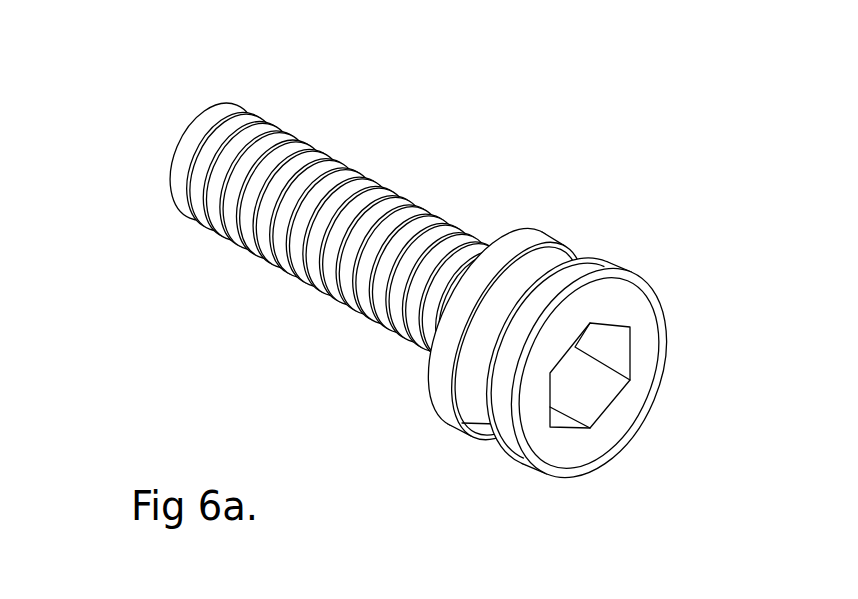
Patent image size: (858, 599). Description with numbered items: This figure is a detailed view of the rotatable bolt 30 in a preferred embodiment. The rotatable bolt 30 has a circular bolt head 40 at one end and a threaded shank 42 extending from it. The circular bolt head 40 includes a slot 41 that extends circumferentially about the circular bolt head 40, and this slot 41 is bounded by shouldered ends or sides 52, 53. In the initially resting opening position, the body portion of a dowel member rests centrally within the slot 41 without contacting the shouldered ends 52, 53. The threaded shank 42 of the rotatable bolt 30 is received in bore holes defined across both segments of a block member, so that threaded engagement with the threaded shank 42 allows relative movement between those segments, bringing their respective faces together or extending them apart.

The rotatable bolt 30 is at (497, 274).
The circular bolt head 40 is at (640, 303).
The slot 41 is at (566, 352).
The threaded shank 42 is at (288, 271).
The shouldered end 52 is at (462, 400).
The shouldered end 53 is at (462, 425).